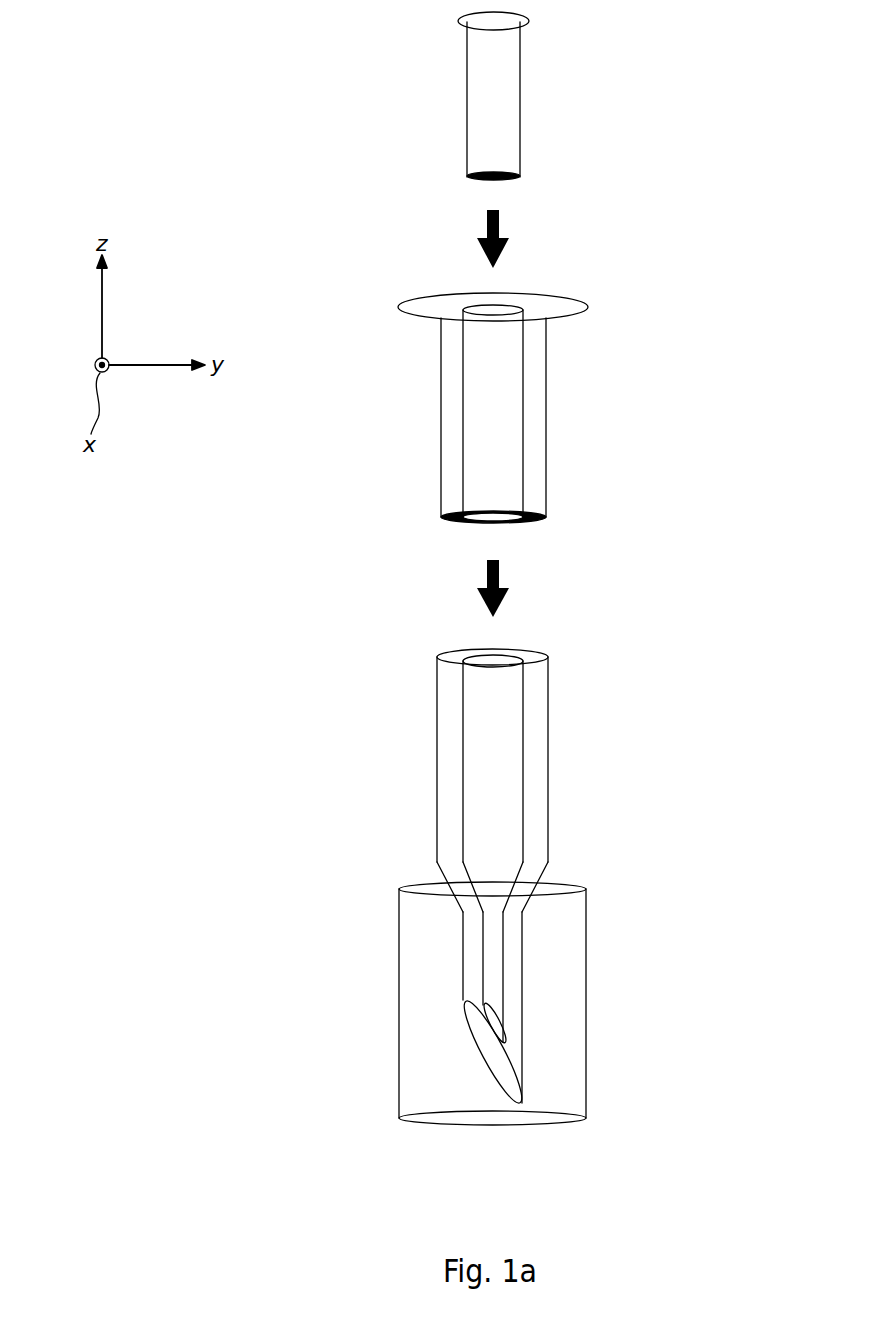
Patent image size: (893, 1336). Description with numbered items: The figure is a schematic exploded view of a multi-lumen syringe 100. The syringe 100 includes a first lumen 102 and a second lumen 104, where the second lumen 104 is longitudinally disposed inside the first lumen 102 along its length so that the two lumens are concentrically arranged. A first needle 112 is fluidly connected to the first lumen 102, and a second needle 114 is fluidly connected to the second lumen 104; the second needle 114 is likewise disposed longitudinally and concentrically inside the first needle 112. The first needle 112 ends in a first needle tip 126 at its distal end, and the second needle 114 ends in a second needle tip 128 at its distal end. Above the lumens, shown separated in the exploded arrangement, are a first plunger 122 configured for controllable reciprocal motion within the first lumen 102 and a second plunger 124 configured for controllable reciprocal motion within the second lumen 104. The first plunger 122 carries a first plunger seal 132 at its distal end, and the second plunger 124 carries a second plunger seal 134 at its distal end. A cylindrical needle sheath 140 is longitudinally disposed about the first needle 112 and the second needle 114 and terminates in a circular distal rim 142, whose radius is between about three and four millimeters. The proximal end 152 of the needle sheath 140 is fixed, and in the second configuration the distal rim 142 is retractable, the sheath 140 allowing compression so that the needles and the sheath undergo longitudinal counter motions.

The multi-lumen syringe 100 is at (180, 45).
The first lumen 102 is at (500, 920).
The second lumen 104 is at (539, 760).
The first needle 112 is at (541, 939).
The second needle 114 is at (464, 954).
The first plunger 122 is at (533, 421).
The second plunger 124 is at (550, 111).
The first needle tip 126 is at (483, 1068).
The second needle tip 128 is at (411, 1023).
The first plunger seal 132 is at (539, 530).
The second plunger seal 134 is at (527, 191).
The needle sheath 140 is at (528, 1012).
The distal rim 142 is at (494, 1156).
The proximal end 152 is at (423, 885).